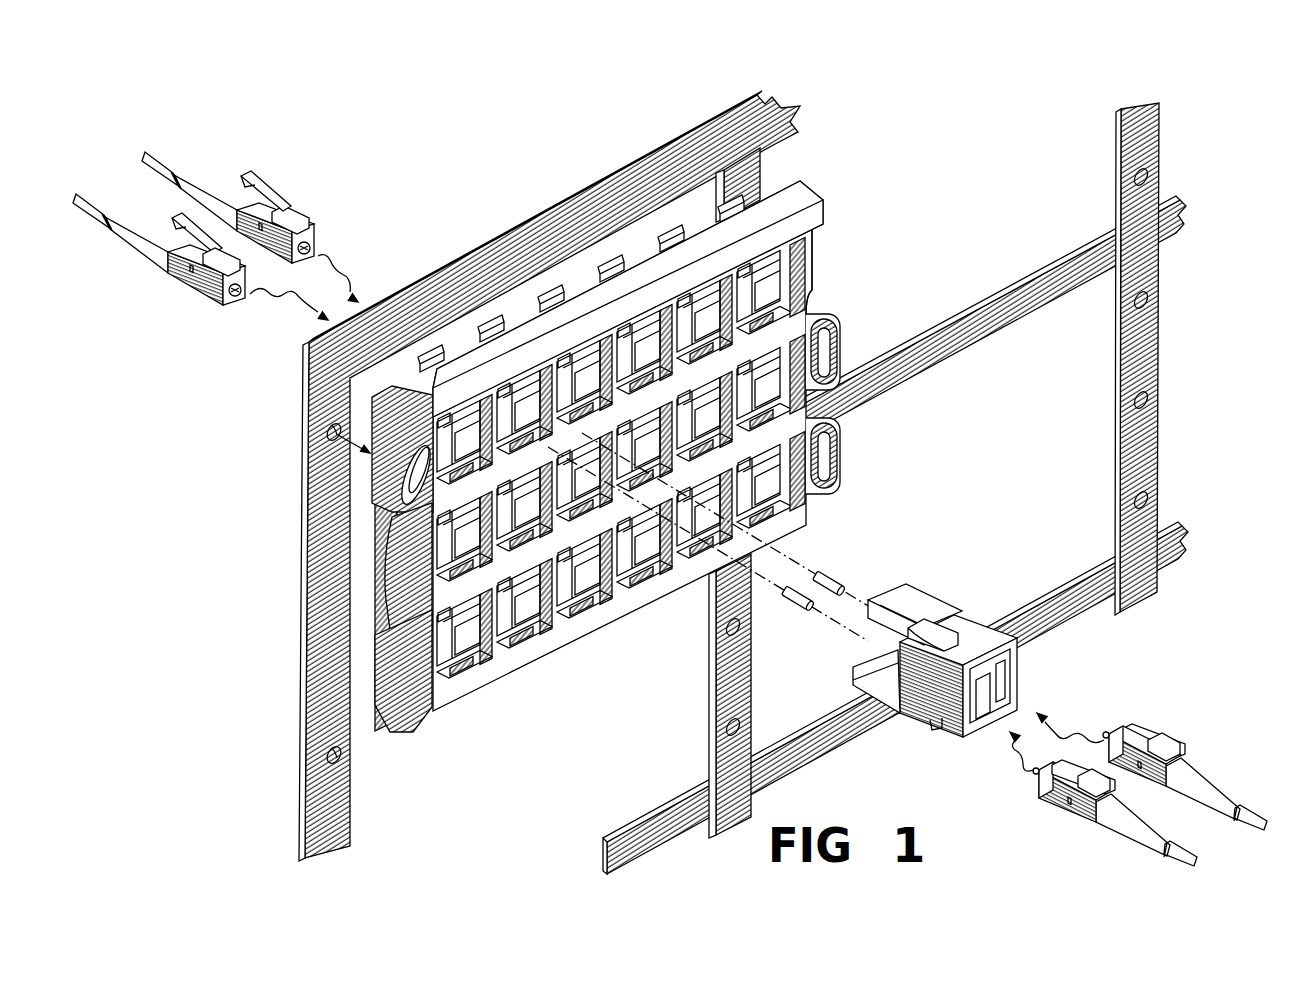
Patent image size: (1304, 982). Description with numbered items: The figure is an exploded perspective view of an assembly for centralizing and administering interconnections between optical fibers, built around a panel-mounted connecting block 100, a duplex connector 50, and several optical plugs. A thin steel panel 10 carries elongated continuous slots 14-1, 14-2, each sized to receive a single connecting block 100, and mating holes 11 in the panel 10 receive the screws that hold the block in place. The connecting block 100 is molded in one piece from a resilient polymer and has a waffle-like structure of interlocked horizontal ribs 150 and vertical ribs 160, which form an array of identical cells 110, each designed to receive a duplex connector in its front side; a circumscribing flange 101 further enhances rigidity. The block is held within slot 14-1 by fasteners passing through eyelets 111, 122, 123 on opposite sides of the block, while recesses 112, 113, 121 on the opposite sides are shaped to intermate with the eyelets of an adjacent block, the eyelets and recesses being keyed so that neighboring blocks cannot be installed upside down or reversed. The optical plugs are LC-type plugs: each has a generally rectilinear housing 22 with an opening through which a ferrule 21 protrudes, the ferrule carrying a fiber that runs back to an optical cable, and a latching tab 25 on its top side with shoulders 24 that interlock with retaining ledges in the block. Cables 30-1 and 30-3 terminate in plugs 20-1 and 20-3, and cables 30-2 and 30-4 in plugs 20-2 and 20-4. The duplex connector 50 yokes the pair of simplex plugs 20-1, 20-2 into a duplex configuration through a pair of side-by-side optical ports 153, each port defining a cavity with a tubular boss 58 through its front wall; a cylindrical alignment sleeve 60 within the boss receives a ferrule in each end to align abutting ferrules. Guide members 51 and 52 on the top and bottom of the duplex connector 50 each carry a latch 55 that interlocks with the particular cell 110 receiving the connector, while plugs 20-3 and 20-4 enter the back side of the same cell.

The panel 10 is at (537, 218).
The mating holes 11 is at (326, 428).
The elongated continuous slot 14-1 is at (708, 188).
The elongated continuous slot 14-2 is at (1107, 152).
The optical plug 20-1 is at (1086, 816).
The optical plug 20-2 is at (1185, 756).
The optical plug 20-3 is at (159, 247).
The optical plug 20-4 is at (253, 185).
The ferrule 21 is at (242, 298).
The housing 22 is at (1085, 820).
The shoulders 24 is at (262, 206).
The latching tab 25 is at (245, 185).
The optical cable 30-1 is at (1188, 860).
The optical cable 30-2 is at (1250, 817).
The optical cable 30-3 is at (95, 202).
The optical cable 30-4 is at (158, 166).
The duplex connector 50 is at (950, 656).
The guide member 51 is at (893, 593).
The guide member 52 is at (886, 697).
The latch 55 is at (947, 618).
The tubular boss 58 is at (898, 655).
The cylindrical alignment sleeve 60 is at (818, 580).
The connecting block 100 is at (578, 443).
The flange 101 is at (805, 190).
The cells 110 is at (471, 406).
The eyelet 111 is at (383, 481).
The recess 112 is at (411, 562).
The recess 113 is at (411, 657).
The recess 121 is at (808, 262).
The eyelet 122 is at (832, 347).
The eyelet 123 is at (828, 445).
The horizontal ribs 150 is at (597, 590).
The optical port 153 is at (1012, 694).
The vertical ribs 160 is at (510, 665).